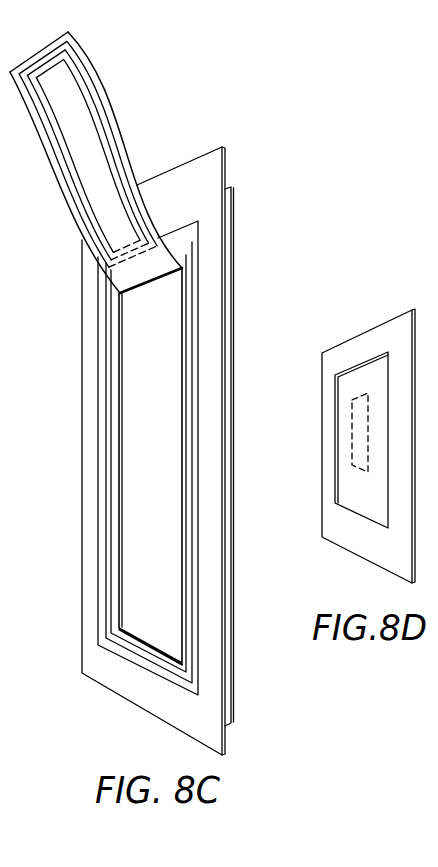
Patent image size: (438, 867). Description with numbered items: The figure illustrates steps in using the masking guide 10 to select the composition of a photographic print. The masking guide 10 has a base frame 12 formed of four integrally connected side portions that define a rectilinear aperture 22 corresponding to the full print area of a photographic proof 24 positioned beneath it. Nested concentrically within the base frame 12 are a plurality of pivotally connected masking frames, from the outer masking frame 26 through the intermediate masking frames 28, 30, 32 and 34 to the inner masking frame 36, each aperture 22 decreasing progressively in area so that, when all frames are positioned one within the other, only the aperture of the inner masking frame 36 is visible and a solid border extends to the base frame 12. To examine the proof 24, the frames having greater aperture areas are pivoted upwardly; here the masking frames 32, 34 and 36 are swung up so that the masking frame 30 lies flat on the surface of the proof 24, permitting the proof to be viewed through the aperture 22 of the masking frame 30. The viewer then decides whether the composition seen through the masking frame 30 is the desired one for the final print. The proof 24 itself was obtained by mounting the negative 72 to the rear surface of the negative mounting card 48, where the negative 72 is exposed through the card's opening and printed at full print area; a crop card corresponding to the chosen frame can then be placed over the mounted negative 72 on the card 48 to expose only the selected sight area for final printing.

In FIG. 8C, the masking guide 10 is at (198, 134).
In FIG. 8C, the base frame 12 is at (92, 652).
In FIG. 8C, the aperture 22 is at (119, 336).
In FIG. 8C, the photographic proof 24 is at (228, 208).
In FIG. 8C, the outer masking frame 26 is at (118, 655).
In FIG. 8C, the intermediate masking frame 28 is at (137, 652).
In FIG. 8C, the masking frame 30 is at (163, 657).
In FIG. 8C, the intermediate masking frame 32 is at (80, 70).
In FIG. 8C, the intermediate masking frame 34 is at (85, 98).
In FIG. 8C, the inner masking frame 36 is at (97, 135).
In FIG. 8D, the negative mounting card 48 is at (357, 347).
In FIG. 8D, the negative 72 is at (345, 473).